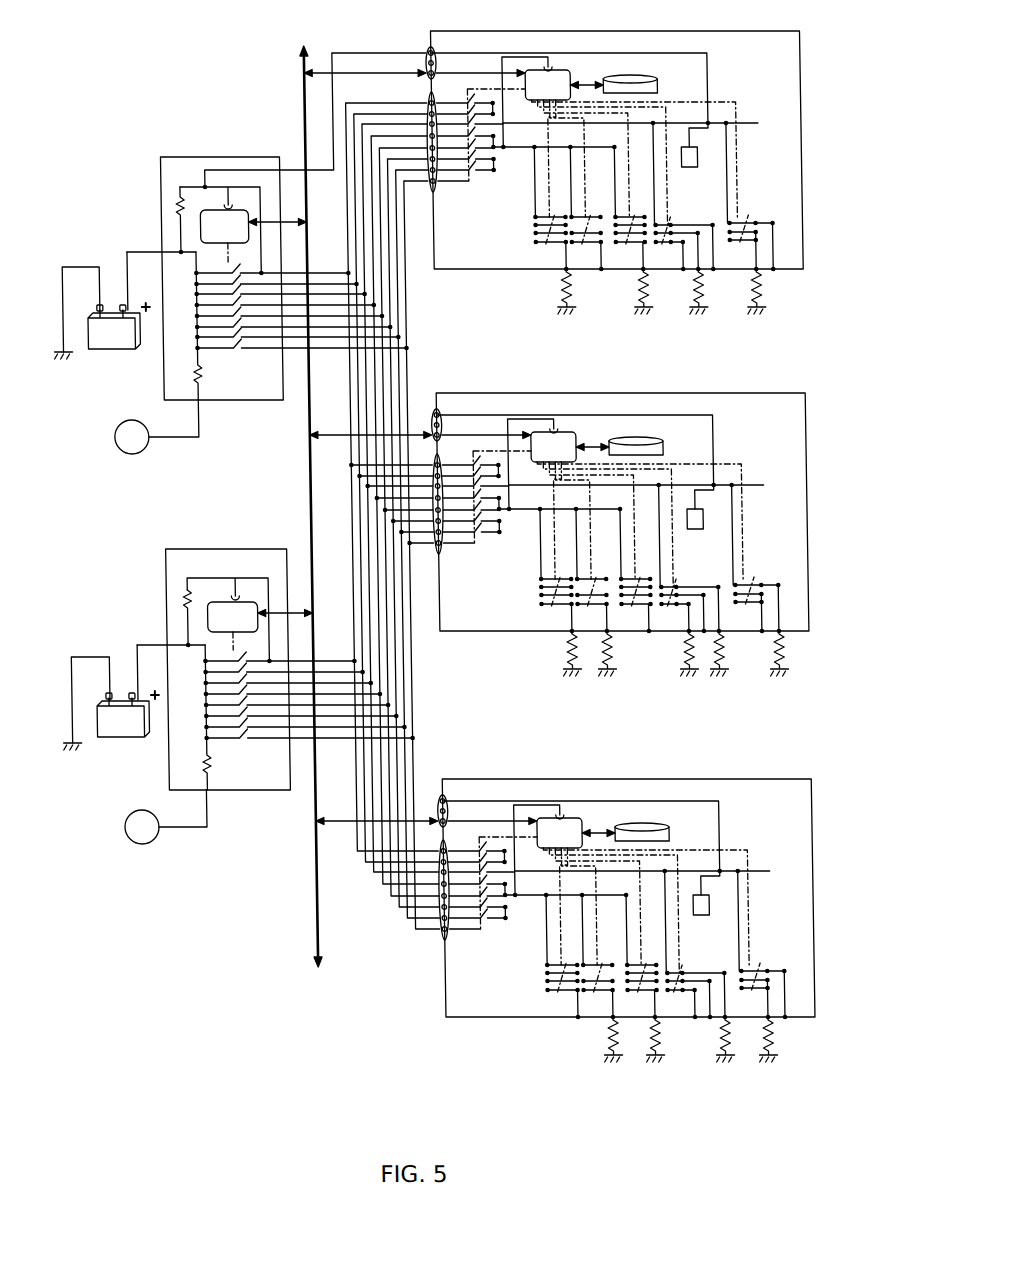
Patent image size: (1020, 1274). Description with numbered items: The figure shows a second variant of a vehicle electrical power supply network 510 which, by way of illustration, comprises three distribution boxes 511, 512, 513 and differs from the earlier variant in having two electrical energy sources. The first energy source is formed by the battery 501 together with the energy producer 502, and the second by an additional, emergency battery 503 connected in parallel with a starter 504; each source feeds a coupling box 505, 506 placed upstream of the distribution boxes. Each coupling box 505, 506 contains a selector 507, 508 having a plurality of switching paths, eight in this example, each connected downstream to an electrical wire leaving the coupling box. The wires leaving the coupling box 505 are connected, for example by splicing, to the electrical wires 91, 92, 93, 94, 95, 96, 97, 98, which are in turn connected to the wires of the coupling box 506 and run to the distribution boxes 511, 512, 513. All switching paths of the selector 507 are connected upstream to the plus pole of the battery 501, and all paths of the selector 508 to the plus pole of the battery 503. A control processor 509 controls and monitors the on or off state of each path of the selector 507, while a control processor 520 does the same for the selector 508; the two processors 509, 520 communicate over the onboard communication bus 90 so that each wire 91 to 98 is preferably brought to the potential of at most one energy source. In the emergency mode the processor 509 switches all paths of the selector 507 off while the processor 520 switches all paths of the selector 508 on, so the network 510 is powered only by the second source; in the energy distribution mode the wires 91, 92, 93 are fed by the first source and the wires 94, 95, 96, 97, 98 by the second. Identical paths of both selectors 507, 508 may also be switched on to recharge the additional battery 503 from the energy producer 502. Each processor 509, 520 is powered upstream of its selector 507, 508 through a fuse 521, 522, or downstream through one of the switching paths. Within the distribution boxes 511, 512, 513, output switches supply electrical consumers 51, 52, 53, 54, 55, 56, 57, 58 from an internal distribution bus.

The electrical power supply network 510 is at (176, 95).
The onboard communication bus 90 is at (298, 102).
The electrical wire 91 is at (390, 535).
The electrical wire 92 is at (352, 853).
The electrical wire 93 is at (360, 868).
The electrical wire 94 is at (369, 880).
The electrical wire 95 is at (377, 892).
The electrical wire 96 is at (385, 904).
The electrical wire 97 is at (393, 914).
The electrical wire 98 is at (406, 738).
The battery 501 is at (114, 745).
The energy producer 502 is at (150, 843).
The additional emergency battery 503 is at (106, 352).
The starter 504 is at (130, 455).
The coupling box 505 is at (251, 638).
The coupling box 506 is at (258, 255).
The selector 507 is at (233, 754).
The selector 508 is at (293, 293).
The control processor 509 is at (259, 617).
The control processor 520 is at (253, 226).
The fuse 521 is at (168, 605).
The fuse 522 is at (170, 208).
The distribution box 511 is at (468, 270).
The distribution box 512 is at (470, 636).
The distribution box 513 is at (430, 1010).
The electrical consumer 51 is at (554, 288).
The load 52 is at (594, 662).
The electrical consumer 53 is at (634, 288).
The consumer 54 is at (672, 670).
The consumer 55 is at (690, 288).
The consumer 56 is at (700, 672).
The consumer 57 is at (745, 298).
The consumer 58 is at (760, 640).